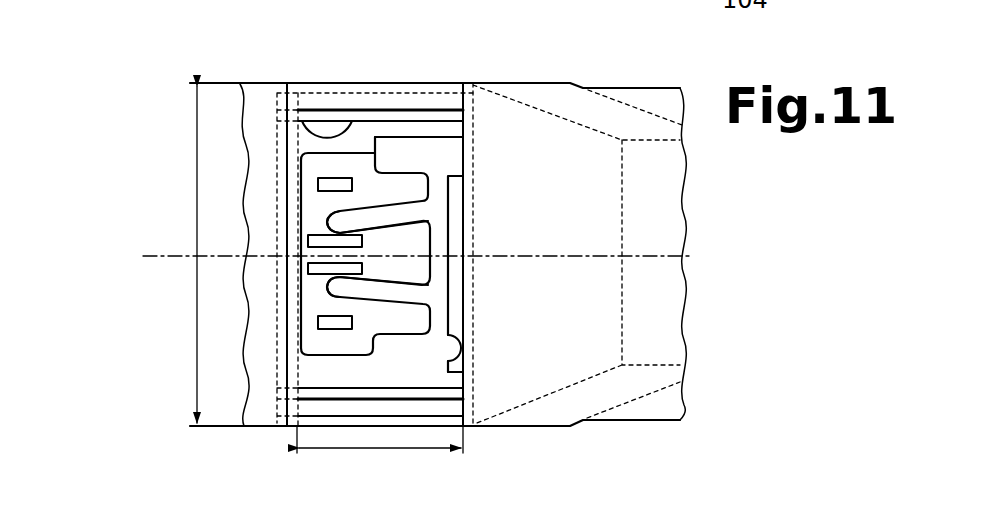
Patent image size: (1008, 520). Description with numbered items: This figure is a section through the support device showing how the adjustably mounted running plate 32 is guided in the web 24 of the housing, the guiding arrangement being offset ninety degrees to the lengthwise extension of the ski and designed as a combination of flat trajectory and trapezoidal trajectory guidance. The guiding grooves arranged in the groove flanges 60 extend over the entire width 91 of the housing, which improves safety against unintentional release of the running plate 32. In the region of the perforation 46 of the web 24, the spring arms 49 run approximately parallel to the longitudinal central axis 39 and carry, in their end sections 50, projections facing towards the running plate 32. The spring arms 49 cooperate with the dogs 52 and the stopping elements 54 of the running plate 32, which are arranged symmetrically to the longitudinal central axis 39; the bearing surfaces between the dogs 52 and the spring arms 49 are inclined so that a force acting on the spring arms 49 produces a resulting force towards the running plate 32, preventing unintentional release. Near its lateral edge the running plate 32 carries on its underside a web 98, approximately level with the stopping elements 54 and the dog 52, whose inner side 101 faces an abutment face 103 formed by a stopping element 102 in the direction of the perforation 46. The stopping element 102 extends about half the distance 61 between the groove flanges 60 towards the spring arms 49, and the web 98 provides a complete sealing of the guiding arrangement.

The web 24 is at (595, 337).
The running plate 32 is at (395, 243).
The longitudinal central axis 39 is at (660, 248).
The perforation 46 is at (417, 189).
The spring arms 49 is at (377, 212).
The end sections 50 is at (325, 222).
The dogs 52 is at (317, 266).
The stopping elements 54 is at (325, 185).
The groove flanges 60 is at (449, 332).
The distance 61 is at (397, 452).
The width 91 is at (193, 236).
The web 98 is at (308, 114).
The inner side 101 is at (298, 116).
The stopping element 102 is at (410, 153).
The abutment face 103 is at (386, 131).